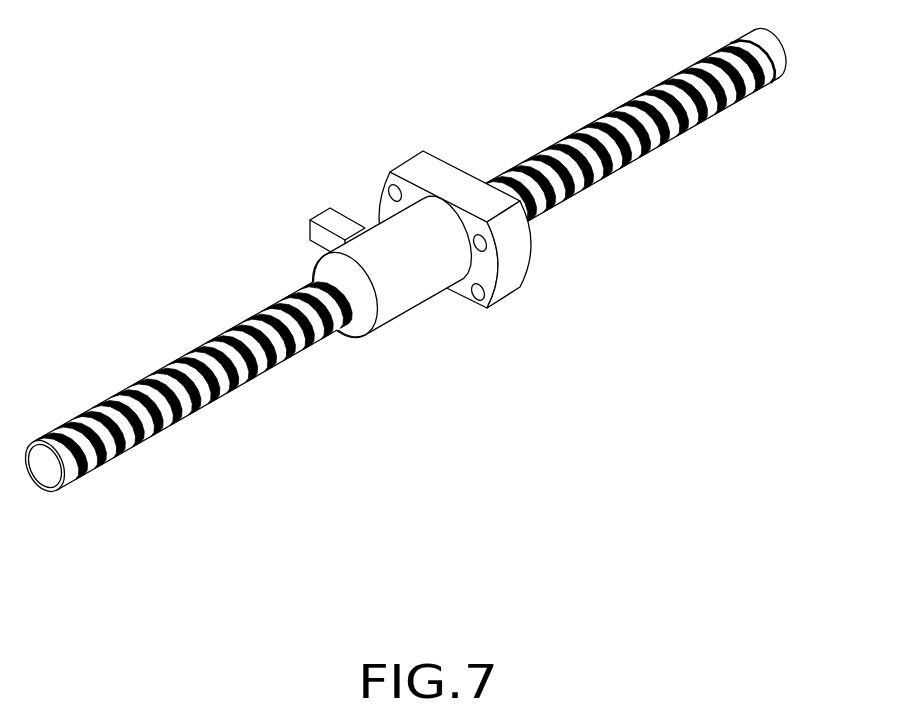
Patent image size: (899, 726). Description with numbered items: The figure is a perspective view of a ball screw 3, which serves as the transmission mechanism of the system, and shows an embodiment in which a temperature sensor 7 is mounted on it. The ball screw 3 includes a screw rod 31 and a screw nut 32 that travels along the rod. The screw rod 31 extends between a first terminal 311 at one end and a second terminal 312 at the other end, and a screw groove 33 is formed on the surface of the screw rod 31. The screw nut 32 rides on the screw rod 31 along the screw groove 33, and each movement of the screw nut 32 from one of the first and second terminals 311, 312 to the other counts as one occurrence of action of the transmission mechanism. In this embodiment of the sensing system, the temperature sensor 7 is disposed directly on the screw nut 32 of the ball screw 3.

The ball screw 3 is at (449, 295).
The screw rod 31 is at (287, 347).
The first terminal 311 is at (782, 40).
The second terminal 312 is at (45, 478).
The screw nut 32 is at (408, 302).
The screw groove 33 is at (152, 431).
The temperature sensor 7 is at (330, 224).